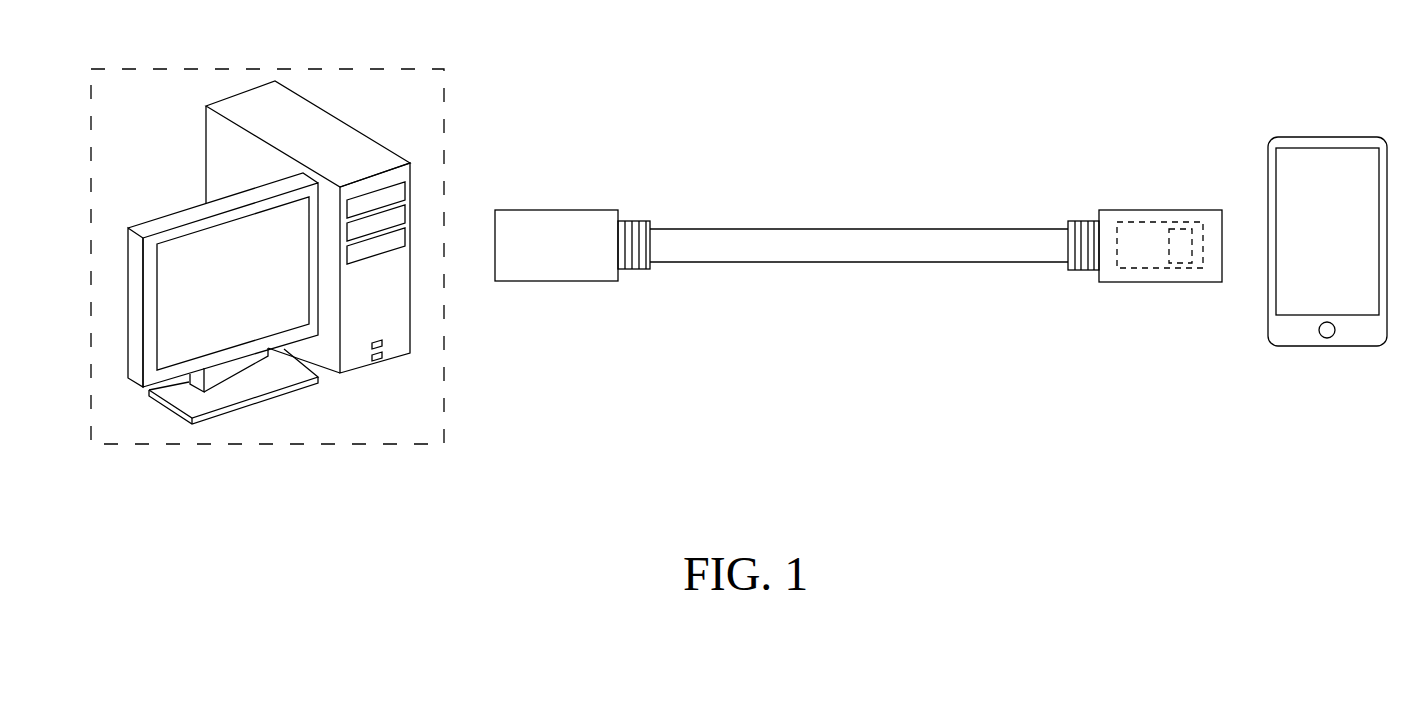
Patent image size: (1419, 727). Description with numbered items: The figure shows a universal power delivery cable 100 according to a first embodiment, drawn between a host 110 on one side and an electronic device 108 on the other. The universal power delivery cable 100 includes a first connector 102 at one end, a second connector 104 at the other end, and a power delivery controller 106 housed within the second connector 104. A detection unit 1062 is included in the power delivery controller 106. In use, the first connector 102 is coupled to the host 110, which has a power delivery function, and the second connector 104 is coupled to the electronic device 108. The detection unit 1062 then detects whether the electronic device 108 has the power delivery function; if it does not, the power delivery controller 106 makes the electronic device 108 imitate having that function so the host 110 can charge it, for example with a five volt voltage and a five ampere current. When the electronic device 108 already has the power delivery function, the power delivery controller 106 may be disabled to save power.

The universal power delivery cable 100 is at (858, 188).
The first connector 102 is at (557, 208).
The second connector 104 is at (1145, 246).
The power delivery controller 106 is at (1165, 282).
The detection unit 1062 is at (1174, 268).
The electronic device 108 is at (1318, 135).
The host 110 is at (269, 68).